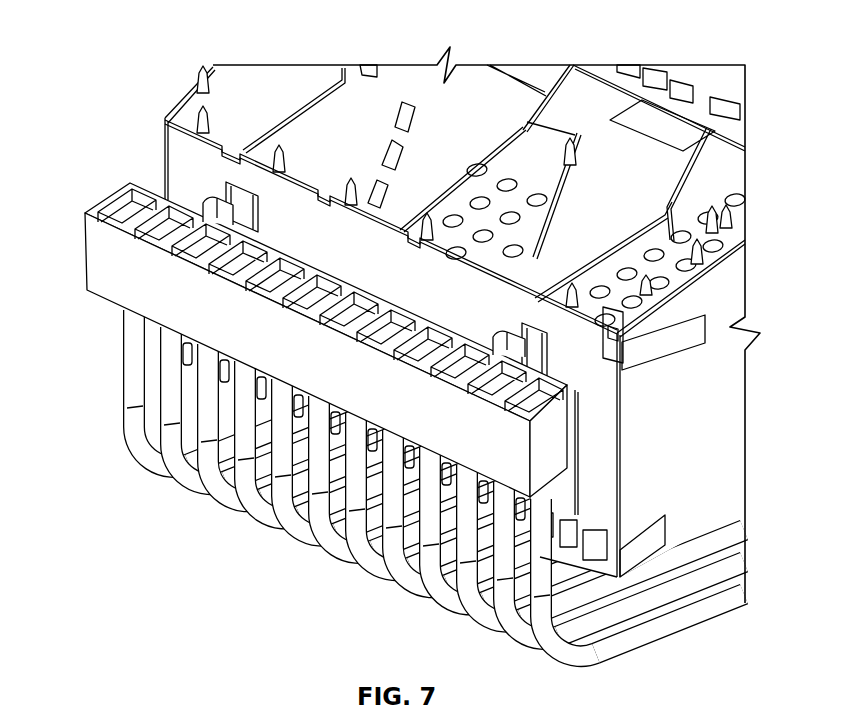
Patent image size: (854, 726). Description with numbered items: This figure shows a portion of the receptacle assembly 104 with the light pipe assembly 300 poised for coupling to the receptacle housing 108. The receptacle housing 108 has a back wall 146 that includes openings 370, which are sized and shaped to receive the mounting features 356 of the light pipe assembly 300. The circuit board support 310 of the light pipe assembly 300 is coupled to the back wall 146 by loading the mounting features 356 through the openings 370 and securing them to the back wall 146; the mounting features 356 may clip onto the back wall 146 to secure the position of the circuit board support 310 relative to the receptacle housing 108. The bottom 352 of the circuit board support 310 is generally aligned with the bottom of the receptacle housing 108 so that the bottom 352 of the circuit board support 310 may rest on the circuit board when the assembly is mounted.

The receptacle assembly 104 is at (450, 337).
The receptacle housing 108 is at (730, 397).
The back wall 146 is at (184, 167).
The light pipe assembly 300 is at (199, 540).
The circuit board support 310 is at (292, 412).
The bottom of the circuit board support 352 is at (107, 199).
The mounting features 356 is at (222, 208).
The openings 370 is at (243, 183).